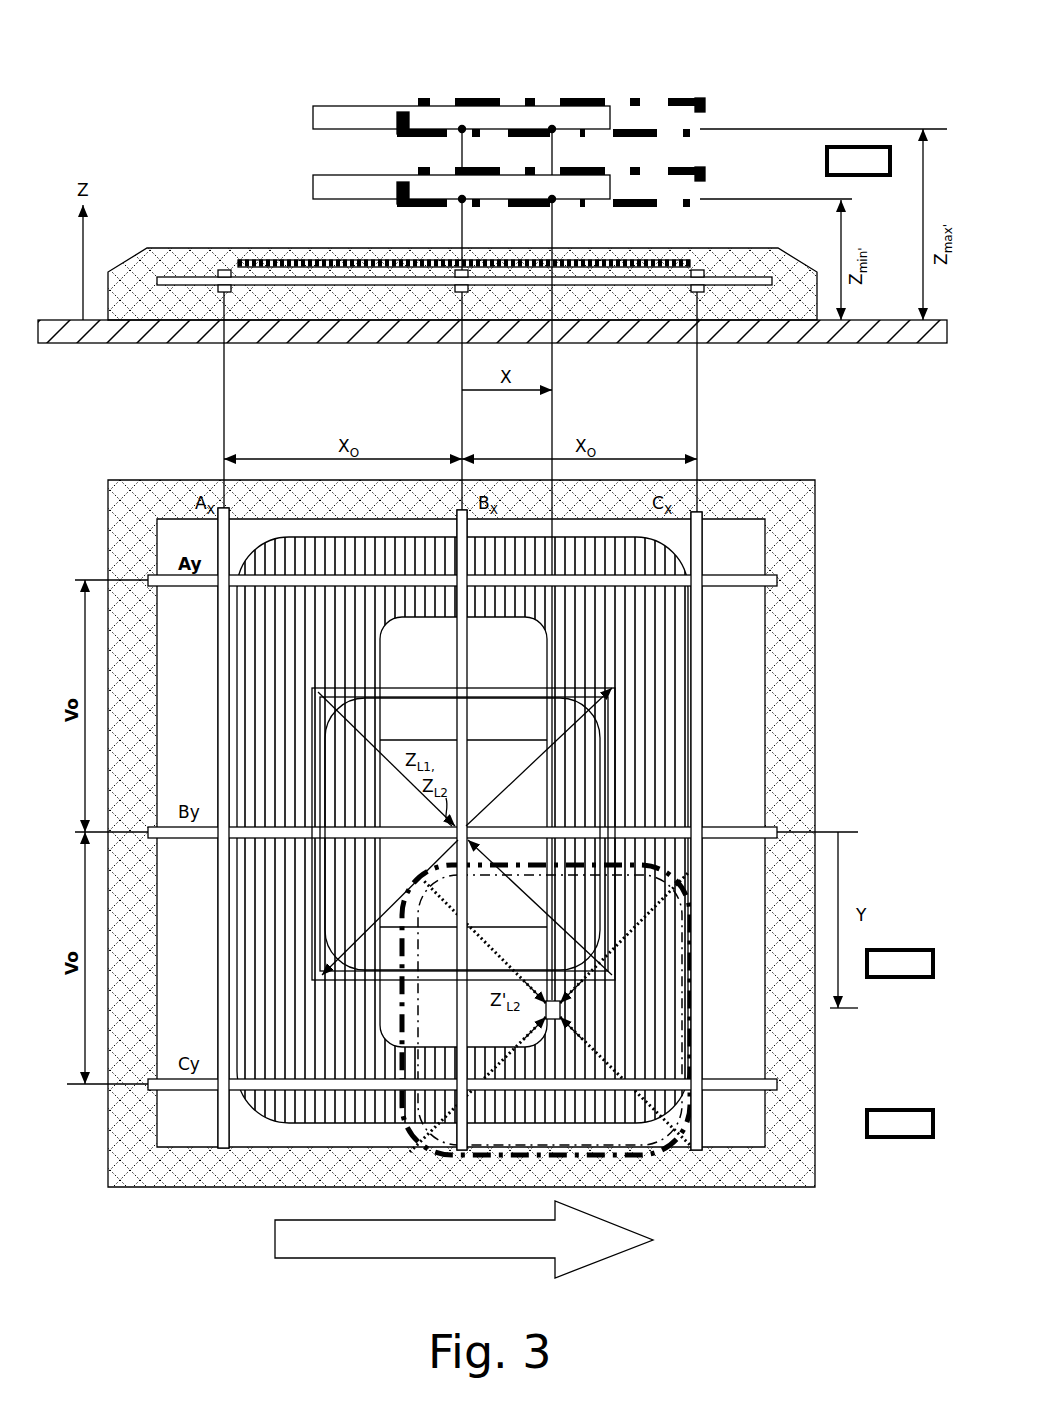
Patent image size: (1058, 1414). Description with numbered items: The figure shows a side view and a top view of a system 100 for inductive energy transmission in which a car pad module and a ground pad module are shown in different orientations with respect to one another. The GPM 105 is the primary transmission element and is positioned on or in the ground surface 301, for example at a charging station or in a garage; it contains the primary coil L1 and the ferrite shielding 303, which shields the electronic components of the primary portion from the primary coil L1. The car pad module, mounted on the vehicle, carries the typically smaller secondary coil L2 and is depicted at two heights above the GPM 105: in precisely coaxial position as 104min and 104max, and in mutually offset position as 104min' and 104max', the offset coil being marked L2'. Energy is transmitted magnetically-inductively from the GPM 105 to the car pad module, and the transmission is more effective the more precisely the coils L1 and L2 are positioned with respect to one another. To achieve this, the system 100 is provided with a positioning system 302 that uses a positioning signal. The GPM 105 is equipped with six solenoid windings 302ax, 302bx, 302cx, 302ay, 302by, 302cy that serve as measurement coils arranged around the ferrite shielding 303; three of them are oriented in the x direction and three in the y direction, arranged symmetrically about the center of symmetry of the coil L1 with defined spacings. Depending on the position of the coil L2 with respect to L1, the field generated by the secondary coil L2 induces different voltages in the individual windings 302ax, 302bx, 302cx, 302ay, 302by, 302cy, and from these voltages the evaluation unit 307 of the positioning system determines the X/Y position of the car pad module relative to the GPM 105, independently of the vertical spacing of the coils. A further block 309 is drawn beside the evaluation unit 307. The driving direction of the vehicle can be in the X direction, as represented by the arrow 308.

The system for inductive energy transmission 100 is at (160, 92).
The CPM at maximum height 104max is at (559, 588).
The CPM at minimum height 104min is at (478, 170).
The CPM at maximum height in offset position 104max' is at (642, 597).
The CPM at minimum height in offset position 104min' is at (739, 152).
The GPM 105 is at (200, 248).
The ground surface 301 is at (70, 320).
The positioning system 302 is at (890, 145).
The solenoid winding 302ax is at (224, 270).
The solenoid winding 302bx is at (458, 292).
The solenoid winding 302cx is at (700, 248).
The solenoid winding 302ay is at (777, 580).
The solenoid winding 302by is at (148, 838).
The solenoid winding 302cy is at (778, 1092).
The ferrite shielding 303 is at (772, 286).
The evaluation unit 307 is at (890, 960).
The arrow 308 is at (340, 1258).
The sensor block 309 is at (890, 1120).
The primary coil L1 is at (365, 260).
The secondary coil L2 is at (463, 491).
The second lens shifted L2' is at (691, 1202).